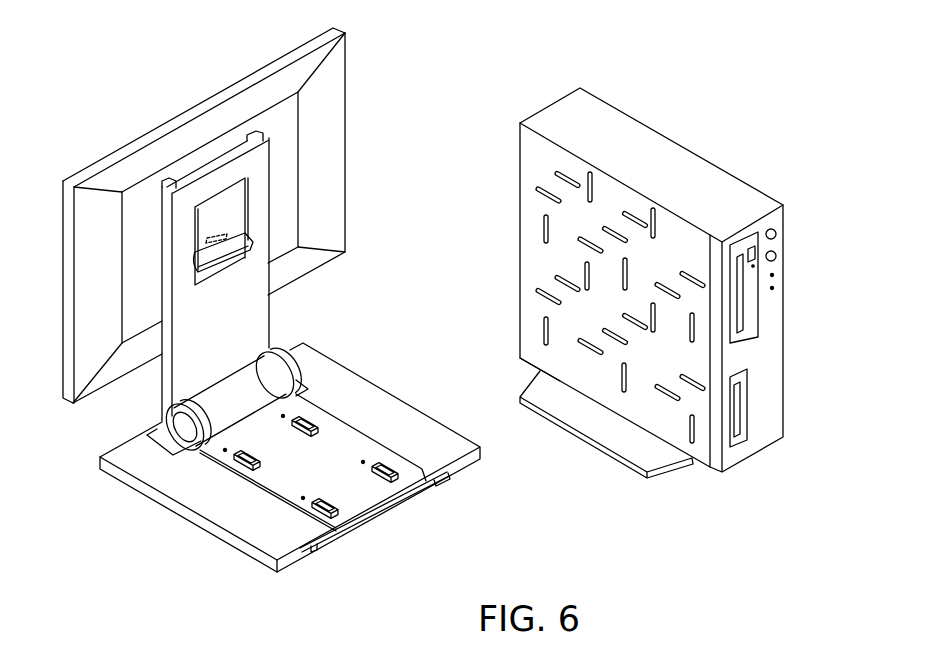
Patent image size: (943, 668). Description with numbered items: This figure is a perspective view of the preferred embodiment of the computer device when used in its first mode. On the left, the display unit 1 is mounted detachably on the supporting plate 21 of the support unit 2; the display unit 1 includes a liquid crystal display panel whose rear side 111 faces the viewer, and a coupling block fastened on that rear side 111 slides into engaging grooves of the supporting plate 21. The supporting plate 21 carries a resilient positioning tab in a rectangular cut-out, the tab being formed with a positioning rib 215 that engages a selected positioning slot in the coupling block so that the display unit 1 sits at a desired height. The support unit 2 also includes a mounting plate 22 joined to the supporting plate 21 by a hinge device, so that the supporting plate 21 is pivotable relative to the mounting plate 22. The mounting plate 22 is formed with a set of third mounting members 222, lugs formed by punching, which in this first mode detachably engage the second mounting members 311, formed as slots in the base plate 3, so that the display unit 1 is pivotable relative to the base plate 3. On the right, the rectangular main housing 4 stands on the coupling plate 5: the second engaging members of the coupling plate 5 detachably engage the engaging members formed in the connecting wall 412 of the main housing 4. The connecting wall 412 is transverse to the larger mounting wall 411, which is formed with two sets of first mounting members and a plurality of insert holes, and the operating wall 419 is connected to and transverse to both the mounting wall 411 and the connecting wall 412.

The display unit 1 is at (255, 213).
The rear side 111 is at (330, 96).
The support unit 2 is at (271, 294).
The supporting plate 21 is at (245, 276).
The positioning rib 215 is at (230, 226).
The mounting plate 22 is at (325, 463).
The third mounting members 222 is at (358, 524).
The second mounting members 311 is at (305, 496).
The base plate 3 is at (197, 512).
The main housing 4 is at (654, 289).
The mounting wall 411 is at (543, 157).
The connecting wall 412 is at (538, 372).
The operating wall 419 is at (781, 254).
The coupling plate 5 is at (618, 447).